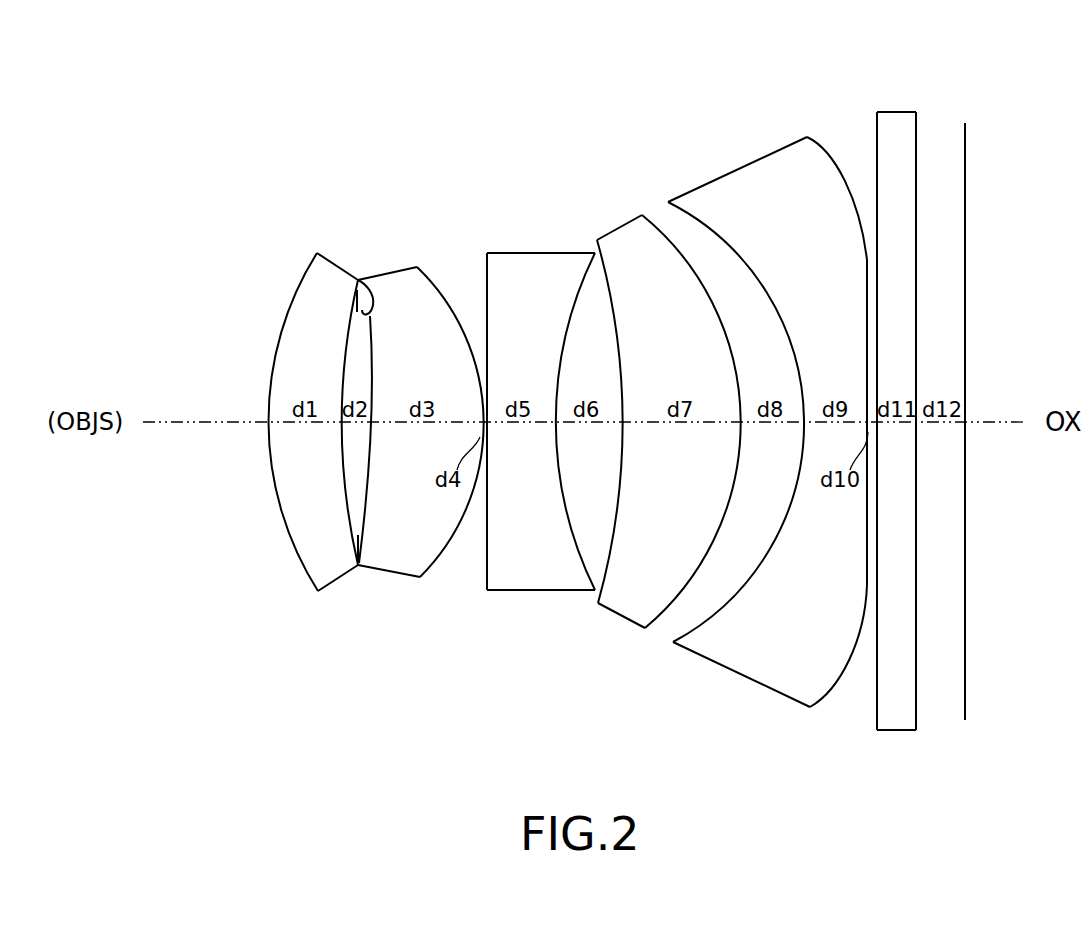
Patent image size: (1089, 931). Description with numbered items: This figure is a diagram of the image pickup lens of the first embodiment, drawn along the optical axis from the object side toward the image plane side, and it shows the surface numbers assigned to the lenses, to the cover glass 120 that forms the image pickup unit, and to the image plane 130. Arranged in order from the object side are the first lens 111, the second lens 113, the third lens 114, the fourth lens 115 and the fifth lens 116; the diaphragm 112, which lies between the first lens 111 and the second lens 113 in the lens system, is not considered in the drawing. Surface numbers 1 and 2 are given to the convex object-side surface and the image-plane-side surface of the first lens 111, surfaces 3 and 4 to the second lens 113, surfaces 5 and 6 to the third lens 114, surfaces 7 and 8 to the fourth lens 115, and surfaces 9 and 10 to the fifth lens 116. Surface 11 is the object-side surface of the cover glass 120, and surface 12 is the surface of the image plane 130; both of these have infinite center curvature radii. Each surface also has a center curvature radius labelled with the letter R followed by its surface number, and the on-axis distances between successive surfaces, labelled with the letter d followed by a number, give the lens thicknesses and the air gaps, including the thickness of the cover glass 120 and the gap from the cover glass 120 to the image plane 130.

The object-side surface of the first lens 1 is at (305, 268).
The image-plane-side surface of the first lens 2 is at (340, 355).
The object-side surface of the second lens 3 is at (386, 375).
The image-plane-side surface of the second lens 4 is at (450, 344).
The object-side surface of the third lens 5 is at (488, 268).
The image-plane-side surface of the third lens 6 is at (571, 361).
The object-side surface of the fourth lens 7 is at (606, 272).
The image-plane-side surface of the fourth lens 8 is at (691, 345).
The object-side surface of the fifth lens 9 is at (686, 215).
The image-plane-side surface of the fifth lens 10 is at (840, 373).
The object-side surface of the cover glass 11 is at (877, 122).
The surface of the image plane 12 is at (968, 376).
The first lens 111 is at (312, 389).
The diaphragm 112 is at (376, 418).
The second lens 113 is at (421, 372).
The third lens 114 is at (535, 385).
The fourth lens 115 is at (662, 367).
The fifth lens 116 is at (770, 386).
The cover glass 120 is at (945, 400).
The image plane 130 is at (968, 718).